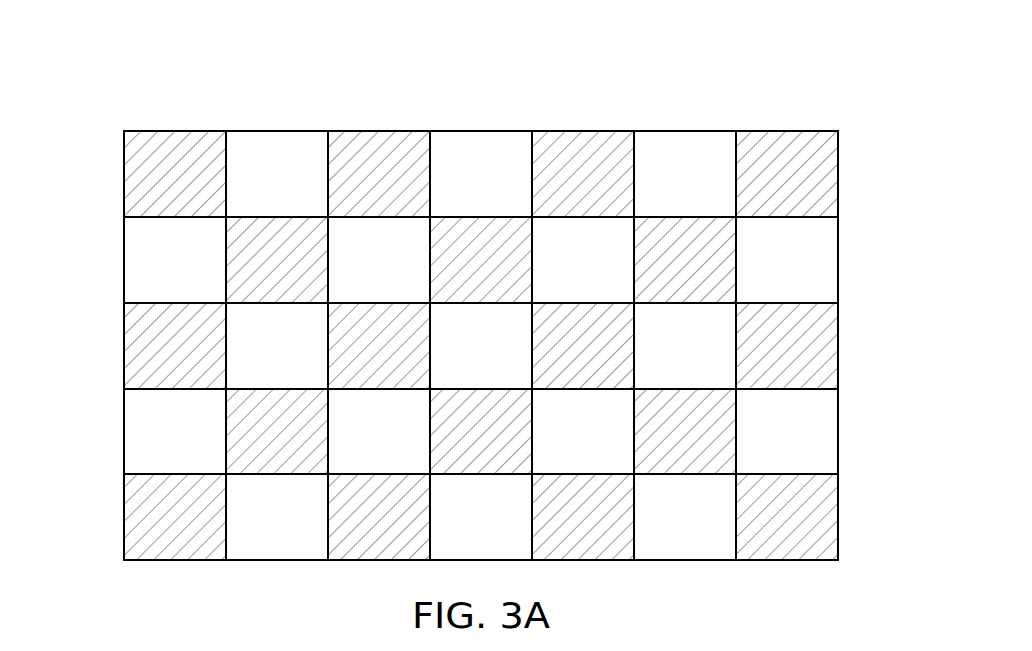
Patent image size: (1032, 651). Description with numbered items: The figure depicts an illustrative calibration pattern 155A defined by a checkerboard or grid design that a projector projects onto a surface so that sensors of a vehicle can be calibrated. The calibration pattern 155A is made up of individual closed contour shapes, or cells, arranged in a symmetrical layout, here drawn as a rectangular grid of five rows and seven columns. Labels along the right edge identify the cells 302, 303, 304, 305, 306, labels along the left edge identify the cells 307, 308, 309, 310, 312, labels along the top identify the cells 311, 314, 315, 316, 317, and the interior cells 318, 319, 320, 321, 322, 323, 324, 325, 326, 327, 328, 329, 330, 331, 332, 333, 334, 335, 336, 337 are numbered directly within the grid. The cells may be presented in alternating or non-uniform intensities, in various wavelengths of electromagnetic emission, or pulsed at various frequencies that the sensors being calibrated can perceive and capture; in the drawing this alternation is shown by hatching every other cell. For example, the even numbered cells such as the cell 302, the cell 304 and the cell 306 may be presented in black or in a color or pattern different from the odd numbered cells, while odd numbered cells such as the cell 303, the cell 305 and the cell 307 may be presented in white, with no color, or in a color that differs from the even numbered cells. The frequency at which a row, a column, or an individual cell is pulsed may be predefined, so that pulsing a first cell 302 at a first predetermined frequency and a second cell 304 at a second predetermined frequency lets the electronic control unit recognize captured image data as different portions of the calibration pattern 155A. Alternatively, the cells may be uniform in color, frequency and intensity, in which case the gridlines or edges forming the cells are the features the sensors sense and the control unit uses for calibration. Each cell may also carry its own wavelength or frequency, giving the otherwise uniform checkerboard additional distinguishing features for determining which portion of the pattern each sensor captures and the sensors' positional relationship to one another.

The calibration pattern 155A is at (433, 286).
The cell 302 is at (838, 175).
The cell 303 is at (838, 261).
The cell 304 is at (838, 347).
The cell 305 is at (838, 432).
The cell 306 is at (838, 518).
The cell 307 is at (124, 259).
The cell 308 is at (124, 173).
The cell 309 is at (124, 430).
The cell 310 is at (124, 345).
The cell 311 is at (277, 131).
The cell 312 is at (124, 516).
The cell 314 is at (379, 131).
The cell 315 is at (481, 131).
The cell 316 is at (583, 131).
The cell 317 is at (685, 131).
The cell 318 is at (253, 275).
The cell 319 is at (355, 275).
The cell 320 is at (457, 275).
The cell 321 is at (559, 275).
The cell 322 is at (661, 275).
The cell 323 is at (253, 361).
The cell 324 is at (355, 361).
The cell 325 is at (457, 361).
The cell 326 is at (559, 361).
The cell 327 is at (661, 361).
The cell 328 is at (253, 446).
The cell 329 is at (355, 446).
The cell 330 is at (457, 446).
The cell 331 is at (559, 446).
The cell 332 is at (661, 446).
The cell 333 is at (253, 532).
The cell 334 is at (355, 532).
The cell 335 is at (457, 532).
The cell 336 is at (559, 532).
The cell 337 is at (661, 532).